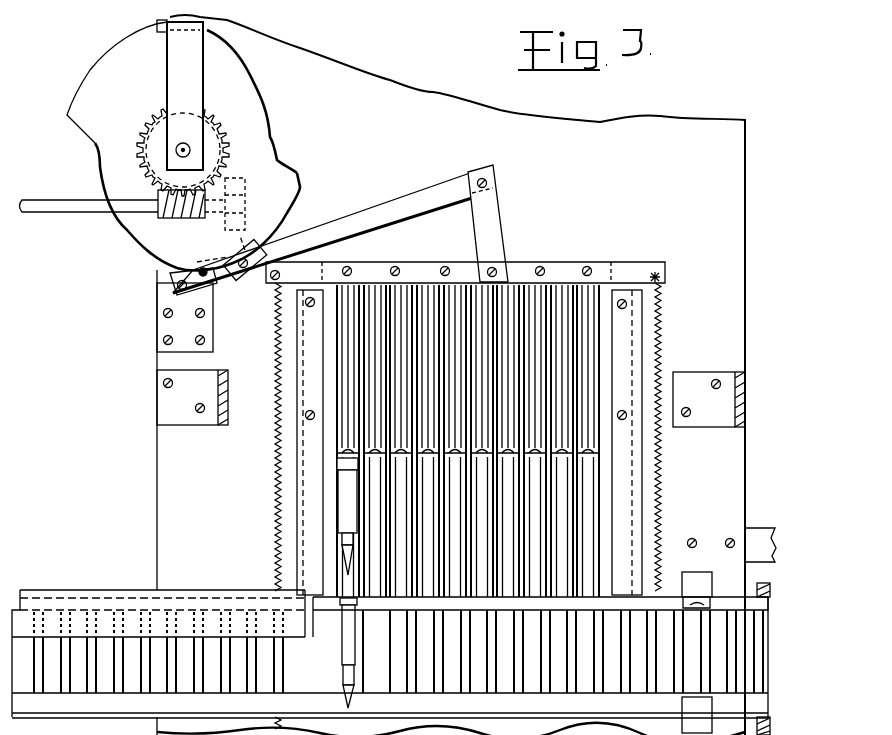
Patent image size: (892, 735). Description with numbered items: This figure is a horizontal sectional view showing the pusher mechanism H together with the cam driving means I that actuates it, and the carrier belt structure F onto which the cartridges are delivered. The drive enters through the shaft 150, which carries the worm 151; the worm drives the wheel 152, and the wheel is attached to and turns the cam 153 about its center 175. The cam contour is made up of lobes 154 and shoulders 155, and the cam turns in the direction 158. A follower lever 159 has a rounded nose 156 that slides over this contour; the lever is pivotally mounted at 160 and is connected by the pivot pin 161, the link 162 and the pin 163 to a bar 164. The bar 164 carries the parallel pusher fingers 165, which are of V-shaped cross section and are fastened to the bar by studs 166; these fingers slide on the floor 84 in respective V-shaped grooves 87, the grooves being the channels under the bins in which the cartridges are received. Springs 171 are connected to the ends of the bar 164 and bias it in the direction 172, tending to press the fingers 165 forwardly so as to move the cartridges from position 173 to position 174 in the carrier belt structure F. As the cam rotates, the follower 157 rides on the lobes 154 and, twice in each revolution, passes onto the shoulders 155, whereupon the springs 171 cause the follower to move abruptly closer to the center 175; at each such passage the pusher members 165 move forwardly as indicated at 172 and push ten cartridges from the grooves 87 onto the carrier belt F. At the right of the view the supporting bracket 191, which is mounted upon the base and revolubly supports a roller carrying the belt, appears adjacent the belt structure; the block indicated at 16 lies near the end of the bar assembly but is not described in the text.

The shaft 150 is at (50, 205).
The worm 151 is at (181, 217).
The wheel 152 is at (230, 161).
The cam 153 is at (240, 64).
The lobes 154 is at (148, 30).
The shoulders 155 is at (84, 134).
The rounded nose 156 is at (210, 279).
The follower 157 is at (172, 277).
The direction of cam rotation 158 is at (127, 79).
The follower lever 159 is at (392, 198).
The pivot 160 is at (257, 258).
The pivot pin 161 is at (487, 183).
The link 162 is at (494, 216).
The pin 163 is at (505, 262).
The bar 164 is at (425, 264).
The pusher fingers 165 is at (345, 326).
The studs 166 is at (348, 265).
The springs 171 is at (272, 418).
The direction of bar bias 172 is at (238, 498).
The initial cartridge position 173 is at (342, 510).
The final cartridge position 174 is at (353, 648).
The center of the cam 175 is at (183, 143).
The block 16 is at (317, 560).
The supporting bracket 191 is at (757, 530).
The floor 84 is at (587, 594).
The V-shaped grooves 87 is at (433, 596).
The pusher mechanism H is at (604, 436).
The carrier belt structure F is at (390, 654).
The cam driving means I is at (273, 111).